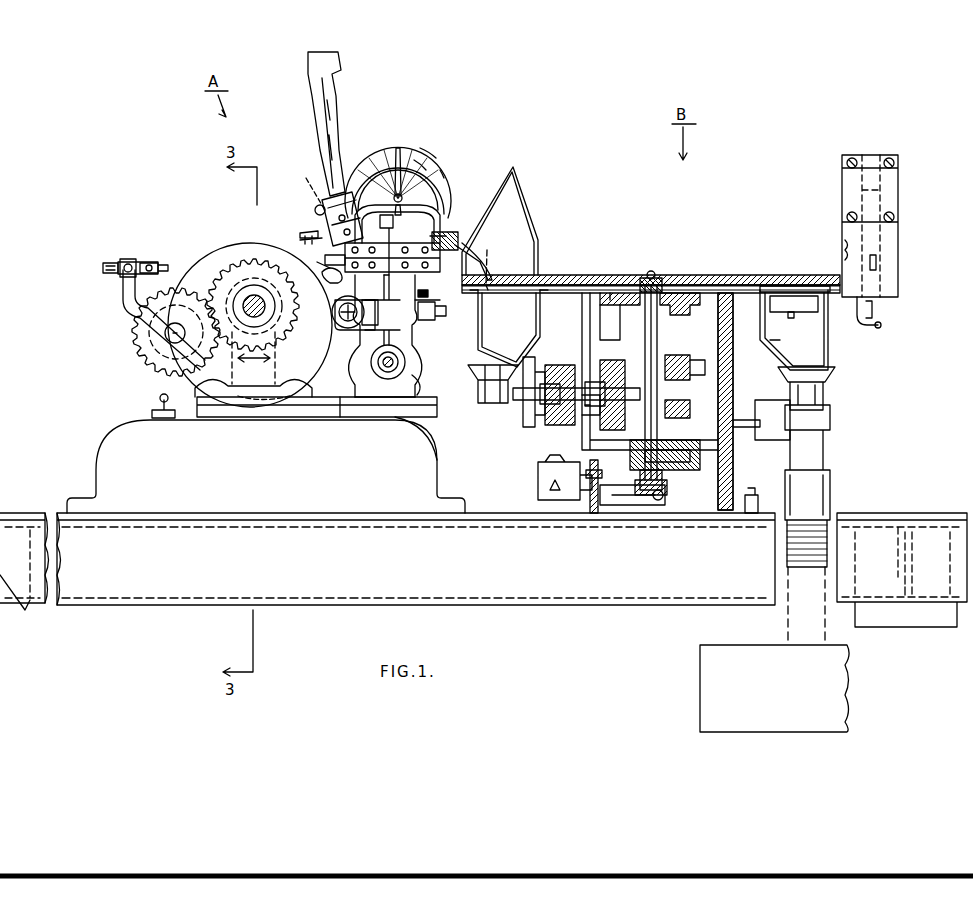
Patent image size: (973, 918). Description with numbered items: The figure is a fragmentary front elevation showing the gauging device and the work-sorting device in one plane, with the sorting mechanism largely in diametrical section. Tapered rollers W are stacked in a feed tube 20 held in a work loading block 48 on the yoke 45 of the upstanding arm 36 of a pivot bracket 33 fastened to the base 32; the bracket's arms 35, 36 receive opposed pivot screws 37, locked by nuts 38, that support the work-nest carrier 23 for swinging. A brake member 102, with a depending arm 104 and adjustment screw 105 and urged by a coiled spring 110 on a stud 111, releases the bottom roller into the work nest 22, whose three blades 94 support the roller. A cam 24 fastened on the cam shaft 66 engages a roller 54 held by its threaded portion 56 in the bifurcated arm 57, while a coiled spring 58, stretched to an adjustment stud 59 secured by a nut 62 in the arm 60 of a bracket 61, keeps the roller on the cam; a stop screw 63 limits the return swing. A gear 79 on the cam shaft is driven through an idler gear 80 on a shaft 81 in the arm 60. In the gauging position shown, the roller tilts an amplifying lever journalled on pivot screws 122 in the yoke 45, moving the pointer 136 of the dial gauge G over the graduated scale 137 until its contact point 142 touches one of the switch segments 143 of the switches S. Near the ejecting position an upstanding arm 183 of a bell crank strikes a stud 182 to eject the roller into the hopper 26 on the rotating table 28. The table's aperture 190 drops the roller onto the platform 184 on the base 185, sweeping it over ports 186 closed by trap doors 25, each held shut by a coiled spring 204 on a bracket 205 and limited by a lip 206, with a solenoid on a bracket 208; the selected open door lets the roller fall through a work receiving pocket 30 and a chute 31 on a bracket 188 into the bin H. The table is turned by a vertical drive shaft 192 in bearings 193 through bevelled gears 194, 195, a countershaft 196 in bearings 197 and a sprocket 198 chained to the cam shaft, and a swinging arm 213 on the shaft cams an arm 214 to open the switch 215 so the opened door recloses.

The feed tube 20 is at (310, 72).
The work nest 22 is at (458, 240).
The work-nest carrier 23 is at (413, 345).
The cam 24 is at (222, 262).
The trap door 25 is at (512, 293).
The hopper 26 is at (530, 200).
The rotating table 28 is at (582, 275).
The work receiving pocket 30 is at (480, 336).
The chute 31 is at (490, 385).
The base 32 is at (115, 471).
The pivot bracket 33 is at (377, 412).
The upstanding arm 35 is at (400, 397).
The upstanding arm 36 is at (420, 385).
The pivot screw 37 is at (378, 368).
The nut 38 is at (383, 366).
The yoke 45 is at (425, 220).
The work loading block 48 is at (330, 200).
The roller 54 is at (333, 328).
The threaded portion 56 is at (333, 315).
The bifurcated arm 57 is at (370, 322).
The coiled spring 58 is at (160, 263).
The adjustment stud 59 is at (103, 268).
The arm 60 is at (125, 287).
The bracket 61 is at (205, 407).
The nut 62 is at (124, 260).
The stop screw 63 is at (446, 316).
The cam shaft 66 is at (252, 294).
The gear 79 is at (226, 262).
The idler gear 80 is at (152, 353).
The shaft 81 is at (165, 334).
The blade 94 is at (420, 268).
The brake member 102 is at (320, 219).
The depending arm 104 is at (317, 264).
The adjustment screw 105 is at (322, 276).
The coiled spring 110 is at (300, 233).
The stud 111 is at (300, 240).
The pivot screw 122 is at (476, 258).
The pointer 136 is at (400, 200).
The graduated scale 137 is at (420, 167).
The contact point 142 is at (397, 147).
The switch segment 143 is at (423, 153).
The stud 182 is at (428, 293).
The upstanding arm 183 is at (418, 302).
The platform 184 is at (608, 293).
The base 185 is at (725, 505).
The port 186 is at (790, 286).
The bracket 188 is at (768, 440).
The aperture 190 is at (501, 260).
The vertical drive shaft 192 is at (658, 278).
The bearing 193 is at (696, 293).
The bevelled gear 194 is at (706, 362).
The bevelled gear 195 is at (690, 409).
The countershaft 196 is at (628, 375).
The bearing 197 is at (592, 408).
The sprocket 198 is at (528, 427).
The coiled spring 204 is at (875, 310).
The bracket 205 is at (882, 325).
The lip 206 is at (791, 318).
The bracket 208 is at (890, 288).
The swinging arm 213 is at (640, 505).
The arm 214 is at (594, 505).
The switch 215 is at (538, 488).
The dial gauge G is at (372, 147).
The electrical switch S is at (432, 152).
The tapered roller W is at (307, 188).
The bin H is at (774, 688).